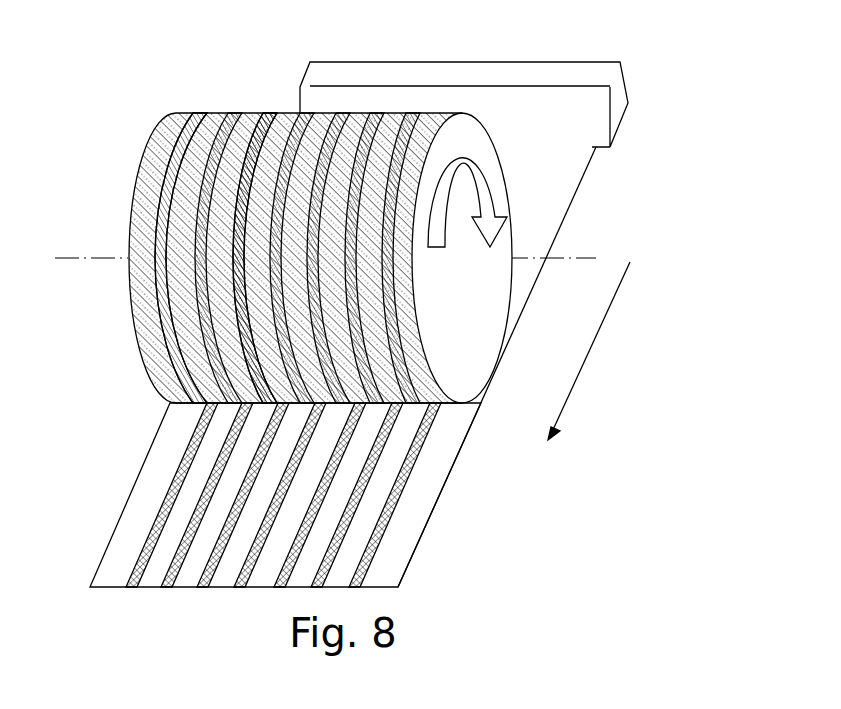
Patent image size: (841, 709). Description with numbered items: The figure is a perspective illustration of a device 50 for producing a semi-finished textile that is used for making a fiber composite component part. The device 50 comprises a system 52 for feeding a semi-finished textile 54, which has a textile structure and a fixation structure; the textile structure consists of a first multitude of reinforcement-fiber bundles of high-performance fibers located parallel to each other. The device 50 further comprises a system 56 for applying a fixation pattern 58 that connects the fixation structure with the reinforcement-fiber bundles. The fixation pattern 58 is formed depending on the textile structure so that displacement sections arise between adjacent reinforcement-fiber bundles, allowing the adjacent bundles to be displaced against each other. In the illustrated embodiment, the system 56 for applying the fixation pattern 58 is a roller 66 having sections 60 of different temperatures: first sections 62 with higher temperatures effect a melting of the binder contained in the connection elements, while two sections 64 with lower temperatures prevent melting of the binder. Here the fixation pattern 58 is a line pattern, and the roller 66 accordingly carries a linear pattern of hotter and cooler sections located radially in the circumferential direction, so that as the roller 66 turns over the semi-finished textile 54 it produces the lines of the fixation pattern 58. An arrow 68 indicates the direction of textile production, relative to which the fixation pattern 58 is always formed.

The device 50 is at (118, 370).
The system for feeding a semi-finished textile 52 is at (615, 92).
The semi-finished textile 54 is at (580, 187).
The system for applying a fixation pattern 56 is at (458, 373).
The fixation pattern 58 is at (400, 500).
The sections having different temperatures 60 is at (118, 97).
The first sections 62 is at (206, 113).
The sections 64 is at (285, 128).
The roller 66 is at (477, 332).
The arrow 68 is at (598, 346).